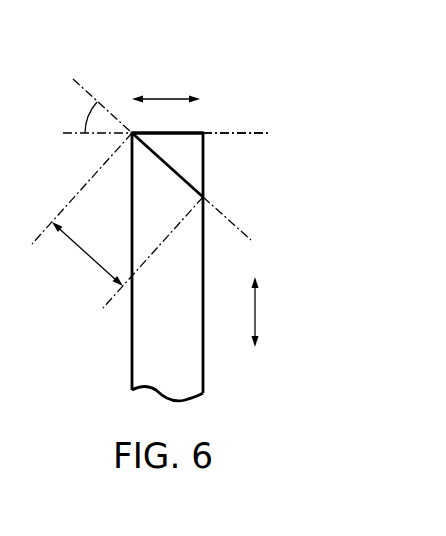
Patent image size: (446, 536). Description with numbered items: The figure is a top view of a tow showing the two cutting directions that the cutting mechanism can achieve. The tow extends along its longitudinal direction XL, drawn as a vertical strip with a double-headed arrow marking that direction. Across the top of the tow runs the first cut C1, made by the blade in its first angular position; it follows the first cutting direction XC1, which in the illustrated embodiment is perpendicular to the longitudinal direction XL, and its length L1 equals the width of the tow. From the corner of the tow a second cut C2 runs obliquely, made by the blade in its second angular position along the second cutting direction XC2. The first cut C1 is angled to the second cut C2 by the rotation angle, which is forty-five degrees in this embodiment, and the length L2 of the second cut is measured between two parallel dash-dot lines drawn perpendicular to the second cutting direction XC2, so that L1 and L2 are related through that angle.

The first cut C1 is at (183, 133).
The second cut C2 is at (173, 169).
The first cutting direction XC1 is at (262, 132).
The second cutting direction XC2 is at (83, 83).
The longitudinal direction XL is at (255, 312).
The length of first cut L1 is at (166, 82).
The length of second cut L2 is at (87, 254).